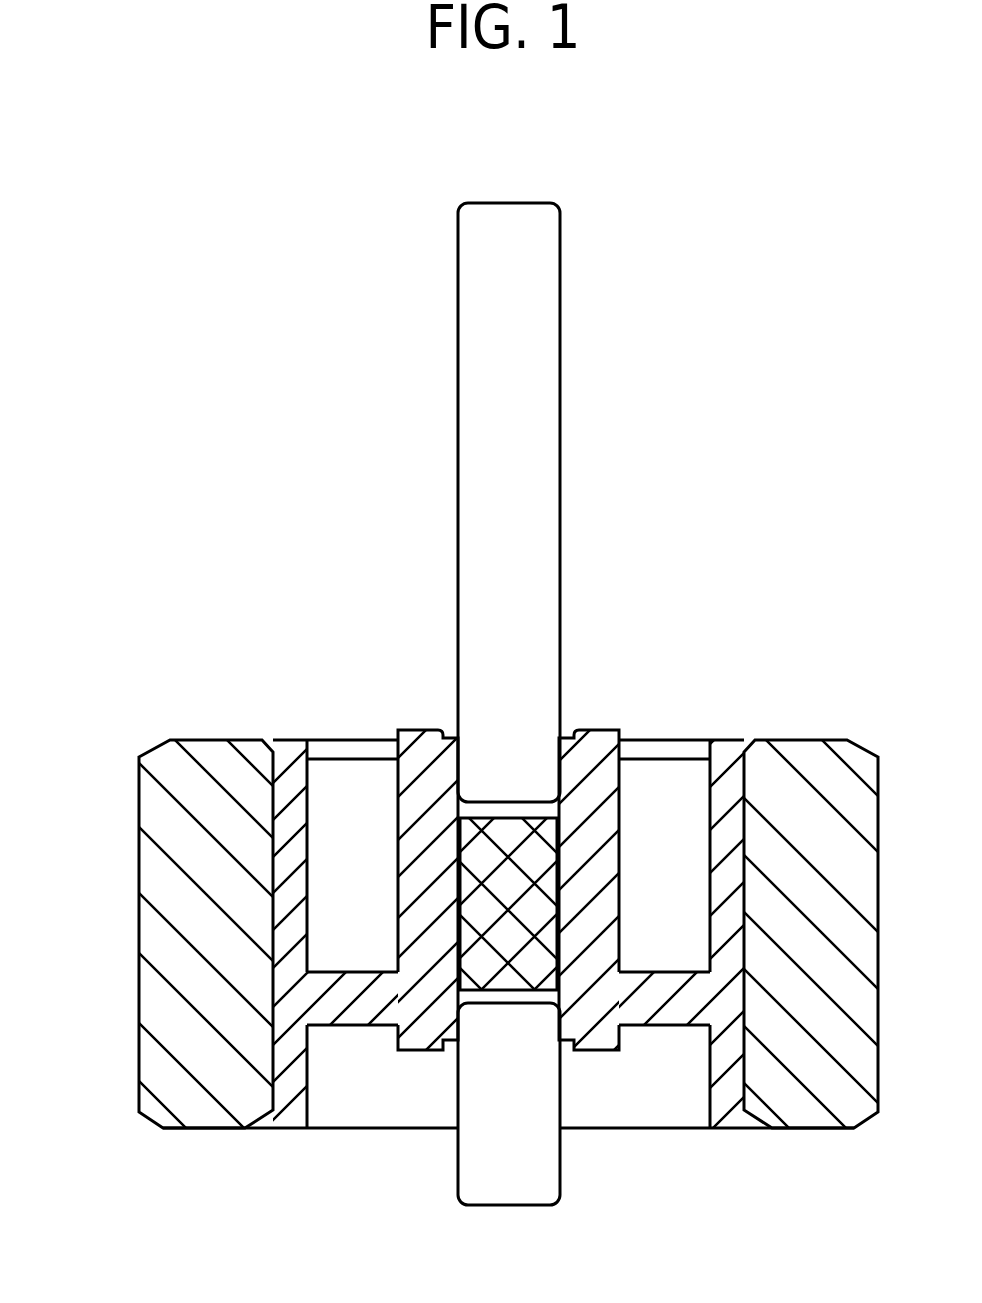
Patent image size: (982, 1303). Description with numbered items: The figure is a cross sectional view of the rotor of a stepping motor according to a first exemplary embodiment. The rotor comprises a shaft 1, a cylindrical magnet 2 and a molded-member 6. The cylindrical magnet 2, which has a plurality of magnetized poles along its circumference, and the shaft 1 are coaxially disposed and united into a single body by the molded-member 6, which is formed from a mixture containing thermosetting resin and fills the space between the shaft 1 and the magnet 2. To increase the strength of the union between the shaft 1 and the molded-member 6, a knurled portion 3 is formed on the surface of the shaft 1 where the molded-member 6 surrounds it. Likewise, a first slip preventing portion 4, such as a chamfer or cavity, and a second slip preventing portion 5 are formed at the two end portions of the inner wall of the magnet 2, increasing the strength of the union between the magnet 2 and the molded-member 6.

The shaft 1 is at (535, 402).
The cylindrical magnet 2 is at (157, 810).
The knurled portion 3 is at (534, 857).
The first slip preventing portion 4 is at (270, 752).
The second slip preventing portion 5 is at (263, 1122).
The molded-member 6 is at (424, 758).